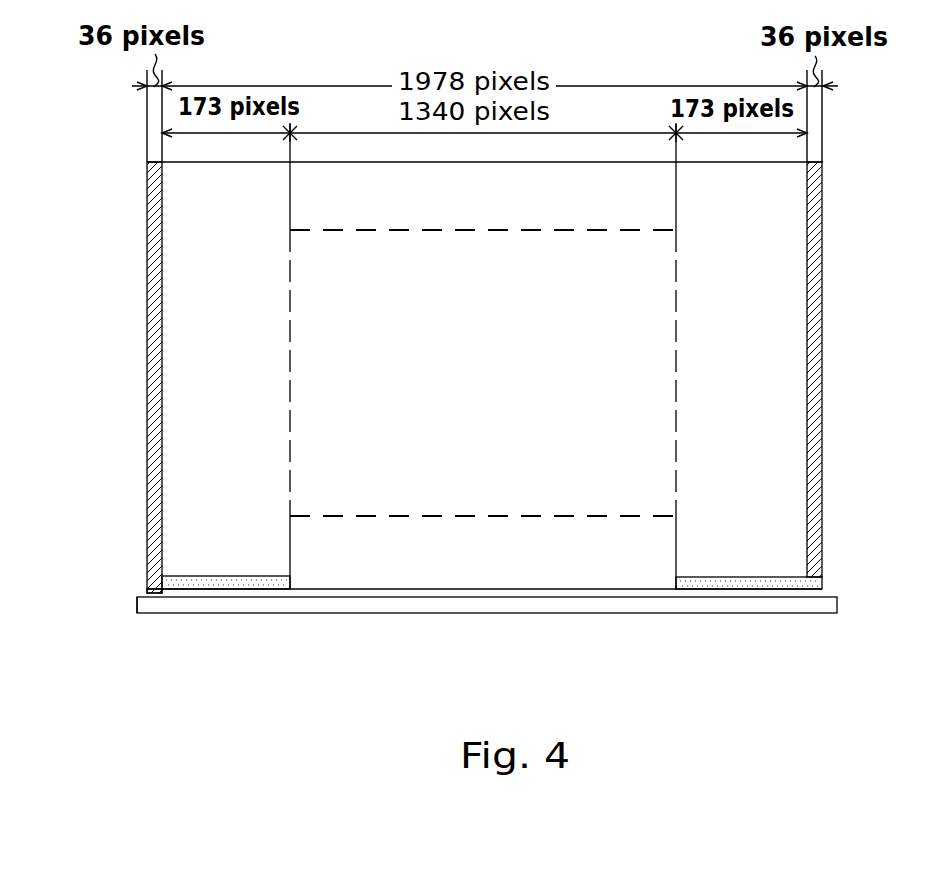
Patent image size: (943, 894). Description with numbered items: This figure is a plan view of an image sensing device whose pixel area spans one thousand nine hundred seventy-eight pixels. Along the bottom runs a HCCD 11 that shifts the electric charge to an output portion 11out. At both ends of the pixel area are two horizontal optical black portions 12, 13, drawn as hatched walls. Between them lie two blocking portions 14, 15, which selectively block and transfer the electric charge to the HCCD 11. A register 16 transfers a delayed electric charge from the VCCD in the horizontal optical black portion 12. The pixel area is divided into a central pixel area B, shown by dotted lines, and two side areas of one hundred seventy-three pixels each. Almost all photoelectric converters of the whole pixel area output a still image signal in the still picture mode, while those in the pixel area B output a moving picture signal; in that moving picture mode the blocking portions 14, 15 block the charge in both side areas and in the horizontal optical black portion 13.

The HCCD 11 is at (697, 603).
The output portion 11out is at (137, 600).
The horizontal optical black portion 12 is at (155, 391).
The horizontal optical black portion 13 is at (814, 400).
The blocking portion 14 is at (258, 585).
The blocking portion 15 is at (770, 583).
The register 16 is at (147, 590).
The pixel area B is at (620, 333).